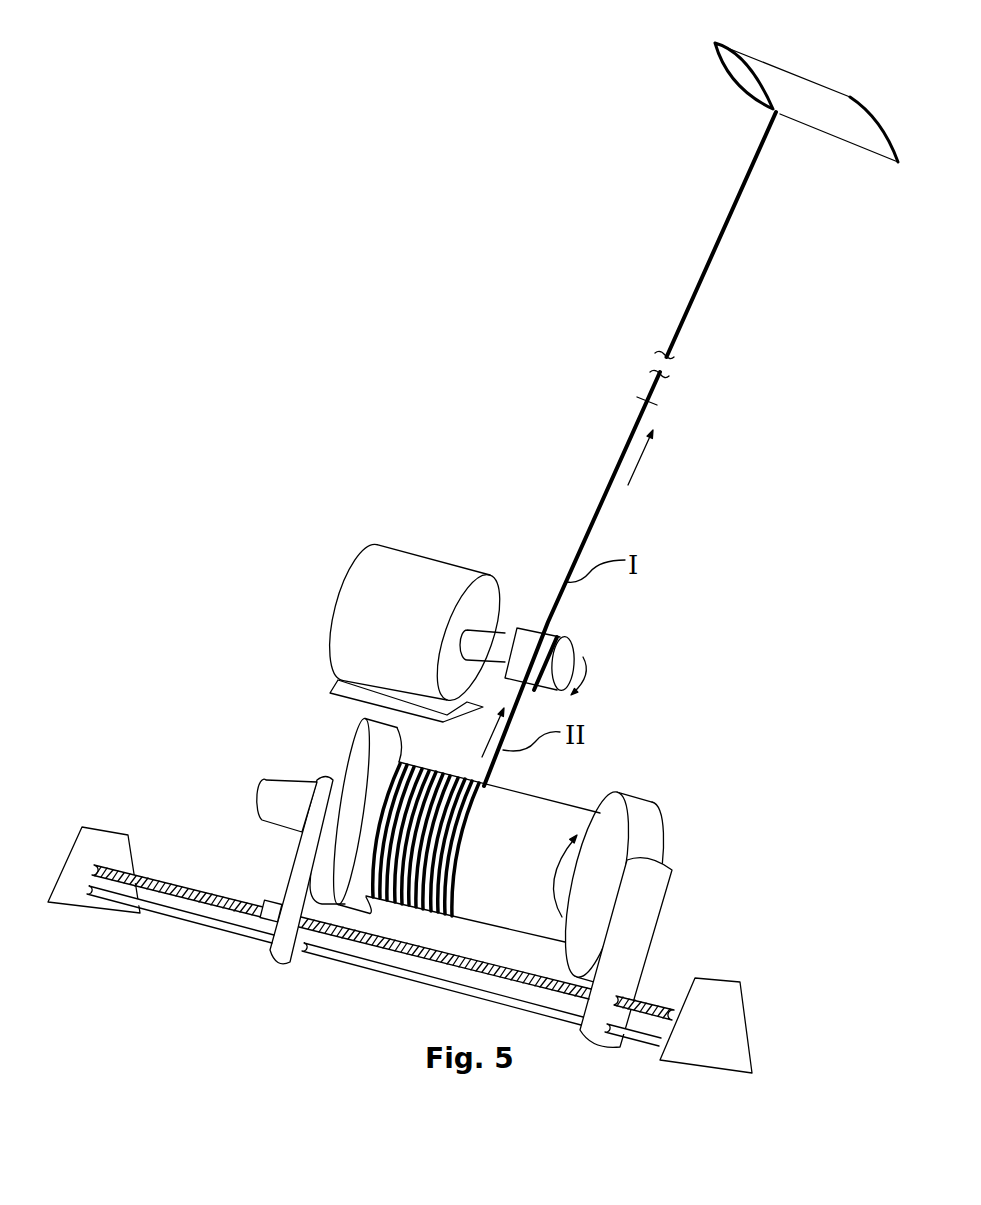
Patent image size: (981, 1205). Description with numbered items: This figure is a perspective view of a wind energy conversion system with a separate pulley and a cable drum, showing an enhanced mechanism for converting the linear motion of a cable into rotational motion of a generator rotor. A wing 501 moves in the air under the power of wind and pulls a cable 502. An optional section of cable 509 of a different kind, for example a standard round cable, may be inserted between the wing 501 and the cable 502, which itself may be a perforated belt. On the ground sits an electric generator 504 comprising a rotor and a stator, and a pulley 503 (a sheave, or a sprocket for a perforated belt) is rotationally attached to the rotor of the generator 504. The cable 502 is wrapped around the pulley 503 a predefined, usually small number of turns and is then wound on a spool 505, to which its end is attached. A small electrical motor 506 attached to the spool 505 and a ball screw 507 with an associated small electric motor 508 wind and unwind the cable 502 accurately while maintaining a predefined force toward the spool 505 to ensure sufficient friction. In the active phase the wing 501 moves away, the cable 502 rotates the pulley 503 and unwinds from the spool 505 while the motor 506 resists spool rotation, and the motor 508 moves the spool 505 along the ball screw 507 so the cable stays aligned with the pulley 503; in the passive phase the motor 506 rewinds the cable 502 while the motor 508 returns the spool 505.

The wing 501 is at (790, 85).
The cable 502 is at (597, 510).
The pulley 503 is at (573, 650).
The electric generator 504 is at (363, 578).
The spool 505 is at (650, 826).
The small electrical motor 506 is at (282, 785).
The ball screw 507 is at (183, 887).
The small electric motor 508 is at (270, 917).
The section of cable 509 is at (647, 395).